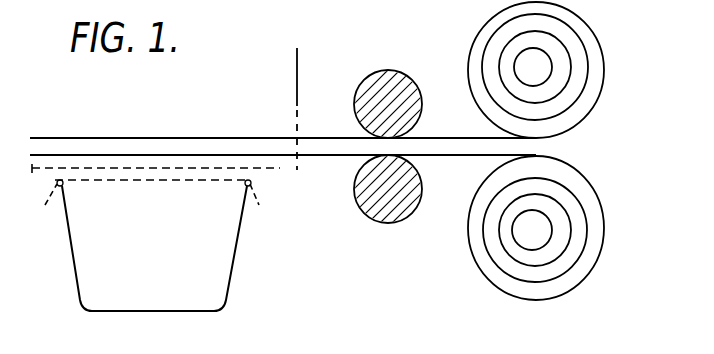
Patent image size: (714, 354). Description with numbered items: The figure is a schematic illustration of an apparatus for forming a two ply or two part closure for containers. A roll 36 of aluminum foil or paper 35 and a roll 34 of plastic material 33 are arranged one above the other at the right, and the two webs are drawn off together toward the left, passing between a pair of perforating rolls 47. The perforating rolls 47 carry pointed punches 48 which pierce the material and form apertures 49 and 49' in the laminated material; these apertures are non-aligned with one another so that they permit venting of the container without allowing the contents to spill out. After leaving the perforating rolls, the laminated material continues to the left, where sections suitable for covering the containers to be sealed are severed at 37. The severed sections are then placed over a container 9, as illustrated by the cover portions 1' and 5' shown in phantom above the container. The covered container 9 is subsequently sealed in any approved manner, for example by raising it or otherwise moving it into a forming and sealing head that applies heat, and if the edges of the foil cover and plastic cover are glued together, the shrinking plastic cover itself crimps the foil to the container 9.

The foil cover section placed over container 1' is at (143, 180).
The plastic cover section placed over container 5' is at (154, 196).
The container 9 is at (186, 261).
The plastic material 33 is at (462, 156).
The roll of plastic material 34 is at (604, 230).
The aluminum foil or paper 35 is at (262, 137).
The roll of aluminum foil or paper 36 is at (603, 44).
The severing location 37 is at (298, 68).
The perforating rolls 47 is at (400, 85).
The pointed punches 48 is at (430, 111).
The aperture 49 is at (179, 139).
The aperture 49' is at (152, 197).